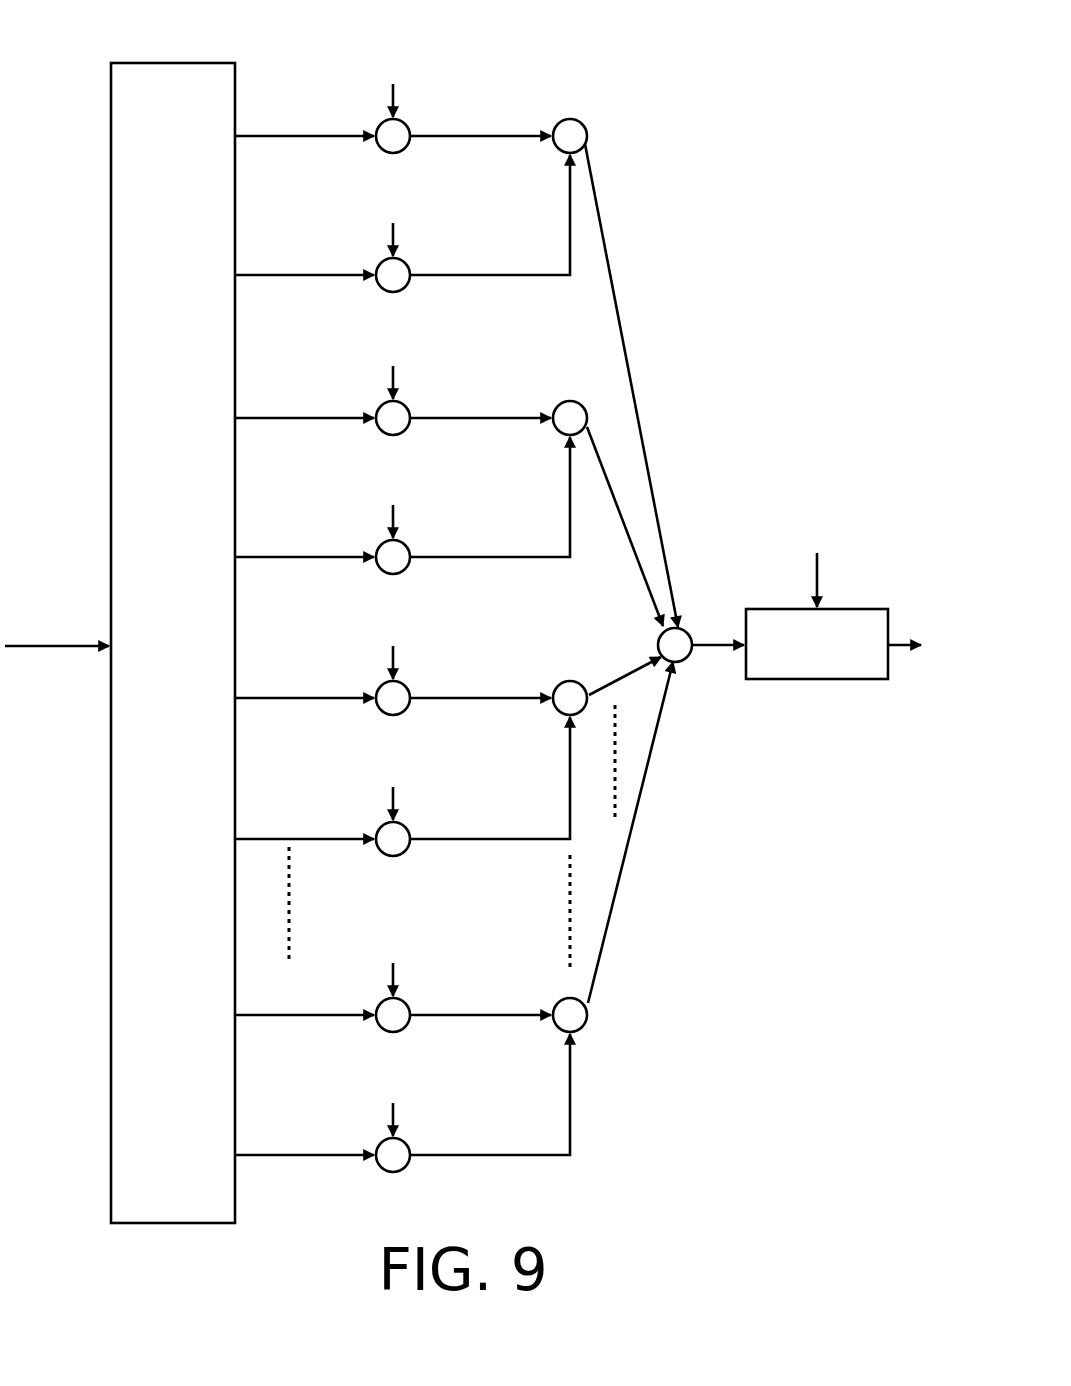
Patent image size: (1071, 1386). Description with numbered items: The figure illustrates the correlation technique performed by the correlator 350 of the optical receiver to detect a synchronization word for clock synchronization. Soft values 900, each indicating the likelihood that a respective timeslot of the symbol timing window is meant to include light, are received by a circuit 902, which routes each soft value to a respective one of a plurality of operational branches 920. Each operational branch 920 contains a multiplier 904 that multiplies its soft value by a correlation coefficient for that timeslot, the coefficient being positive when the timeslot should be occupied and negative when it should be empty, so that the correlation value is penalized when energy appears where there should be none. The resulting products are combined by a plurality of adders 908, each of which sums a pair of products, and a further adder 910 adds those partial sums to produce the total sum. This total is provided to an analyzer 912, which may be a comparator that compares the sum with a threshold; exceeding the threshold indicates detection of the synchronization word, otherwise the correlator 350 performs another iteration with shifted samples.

The correlator 350 is at (791, 143).
The soft values 900 is at (57, 603).
The circuit 902 is at (173, 643).
The multiplier 904 is at (381, 150).
The adders 908 is at (584, 123).
The adder 910 is at (688, 660).
The analyzer 912 is at (833, 600).
The operational branches 920 is at (321, 79).